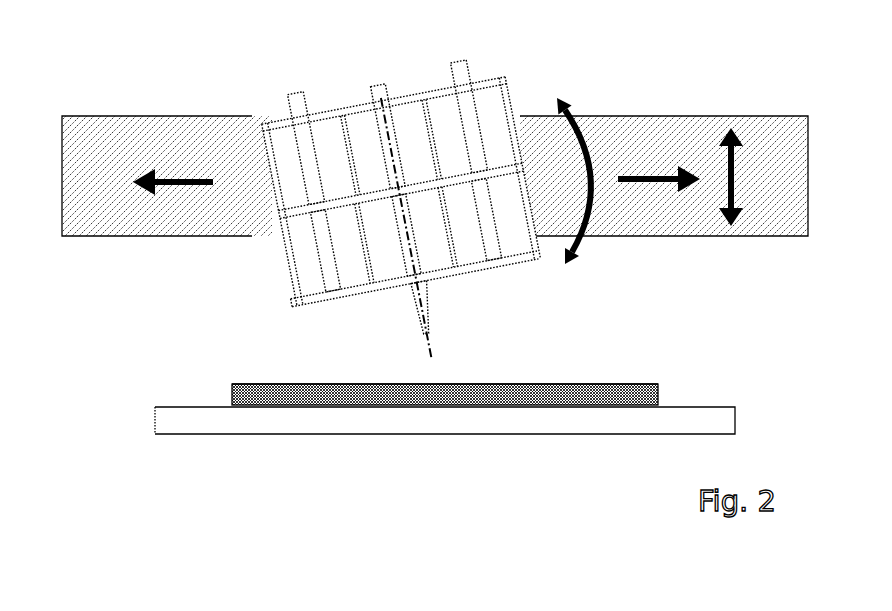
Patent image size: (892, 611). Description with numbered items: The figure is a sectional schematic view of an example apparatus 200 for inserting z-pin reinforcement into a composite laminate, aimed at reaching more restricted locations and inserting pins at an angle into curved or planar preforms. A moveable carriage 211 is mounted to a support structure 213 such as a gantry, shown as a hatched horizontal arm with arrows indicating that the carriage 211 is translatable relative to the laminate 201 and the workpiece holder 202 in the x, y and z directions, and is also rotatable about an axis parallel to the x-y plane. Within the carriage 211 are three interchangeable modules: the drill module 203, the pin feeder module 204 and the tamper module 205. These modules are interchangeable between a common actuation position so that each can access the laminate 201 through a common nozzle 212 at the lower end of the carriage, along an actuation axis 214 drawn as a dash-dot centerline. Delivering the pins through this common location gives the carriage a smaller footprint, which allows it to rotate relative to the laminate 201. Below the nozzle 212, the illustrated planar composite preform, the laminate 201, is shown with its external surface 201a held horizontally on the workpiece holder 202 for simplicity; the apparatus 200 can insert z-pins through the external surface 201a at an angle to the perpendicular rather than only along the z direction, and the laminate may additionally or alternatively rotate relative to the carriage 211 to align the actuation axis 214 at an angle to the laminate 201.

The apparatus 200 is at (136, 70).
The laminate 201 is at (252, 387).
The external surface 201a is at (597, 372).
The workpiece holder 202 is at (173, 415).
The drill module 203 is at (280, 132).
The pin feeder module 204 is at (358, 110).
The tamper module 205 is at (498, 97).
The carriage 211 is at (373, 83).
The nozzle 212 is at (417, 307).
The support structure 213 is at (648, 122).
The actuation axis 214 is at (430, 350).